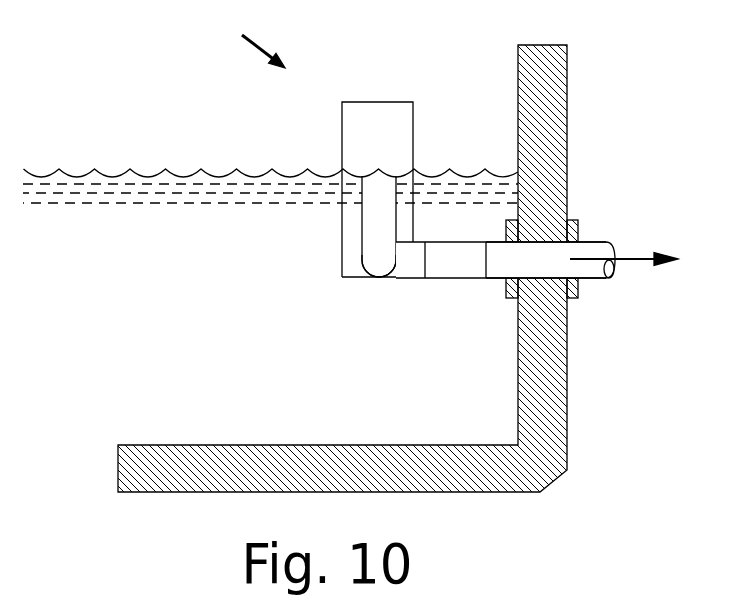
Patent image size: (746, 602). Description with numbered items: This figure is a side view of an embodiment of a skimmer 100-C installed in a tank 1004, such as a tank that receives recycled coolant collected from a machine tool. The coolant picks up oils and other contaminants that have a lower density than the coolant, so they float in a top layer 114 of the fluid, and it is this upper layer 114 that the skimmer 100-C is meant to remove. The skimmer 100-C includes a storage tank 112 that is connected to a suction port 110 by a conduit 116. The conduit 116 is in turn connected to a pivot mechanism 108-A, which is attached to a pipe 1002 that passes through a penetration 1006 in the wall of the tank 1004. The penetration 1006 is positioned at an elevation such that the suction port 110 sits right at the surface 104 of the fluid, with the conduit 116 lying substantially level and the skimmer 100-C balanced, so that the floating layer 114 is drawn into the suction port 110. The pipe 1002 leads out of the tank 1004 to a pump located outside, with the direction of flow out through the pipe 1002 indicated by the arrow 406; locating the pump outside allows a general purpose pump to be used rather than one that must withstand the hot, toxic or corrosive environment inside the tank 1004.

The skimmer 100-C is at (222, 40).
The surface 104 is at (183, 177).
The top layer 114 is at (267, 180).
The storage tank 112 is at (380, 102).
The suction port 110 is at (362, 208).
The conduit 116 is at (362, 267).
The pivot mechanism 108-A is at (448, 279).
The pipe 1002 is at (592, 240).
The tank 1004 is at (568, 105).
The penetration 1006 is at (510, 298).
The flow direction arrow 406 is at (633, 262).